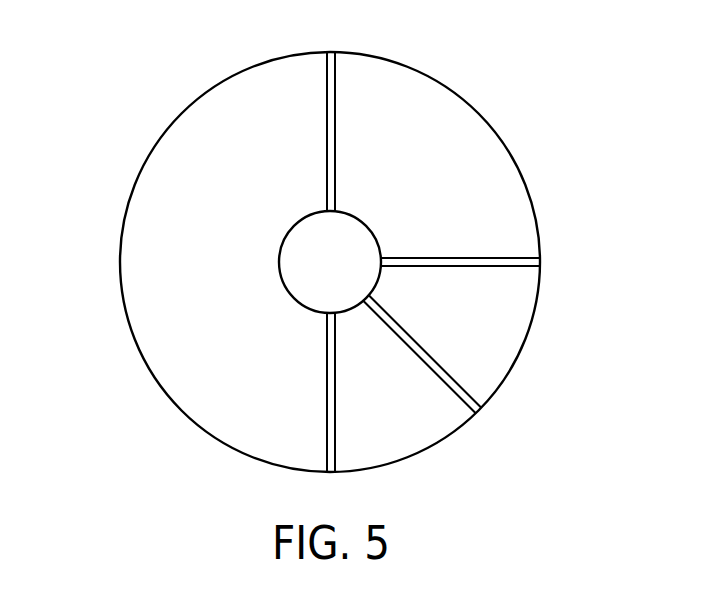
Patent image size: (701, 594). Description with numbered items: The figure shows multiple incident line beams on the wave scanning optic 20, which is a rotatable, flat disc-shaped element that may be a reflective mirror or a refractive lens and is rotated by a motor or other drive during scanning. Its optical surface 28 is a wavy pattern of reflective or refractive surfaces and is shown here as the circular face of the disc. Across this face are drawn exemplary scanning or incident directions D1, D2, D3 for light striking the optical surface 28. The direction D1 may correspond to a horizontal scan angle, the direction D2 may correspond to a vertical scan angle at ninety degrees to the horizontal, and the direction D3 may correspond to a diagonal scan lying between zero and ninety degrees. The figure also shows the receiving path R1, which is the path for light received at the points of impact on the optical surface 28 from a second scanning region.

The wave scanning optic 20 is at (158, 96).
The optical surface 28 is at (183, 184).
The scanning or incident direction D1 is at (336, 101).
The scanning or incident direction D2 is at (455, 257).
The scanning or incident direction D3 is at (447, 369).
The receiving path R1 is at (327, 391).